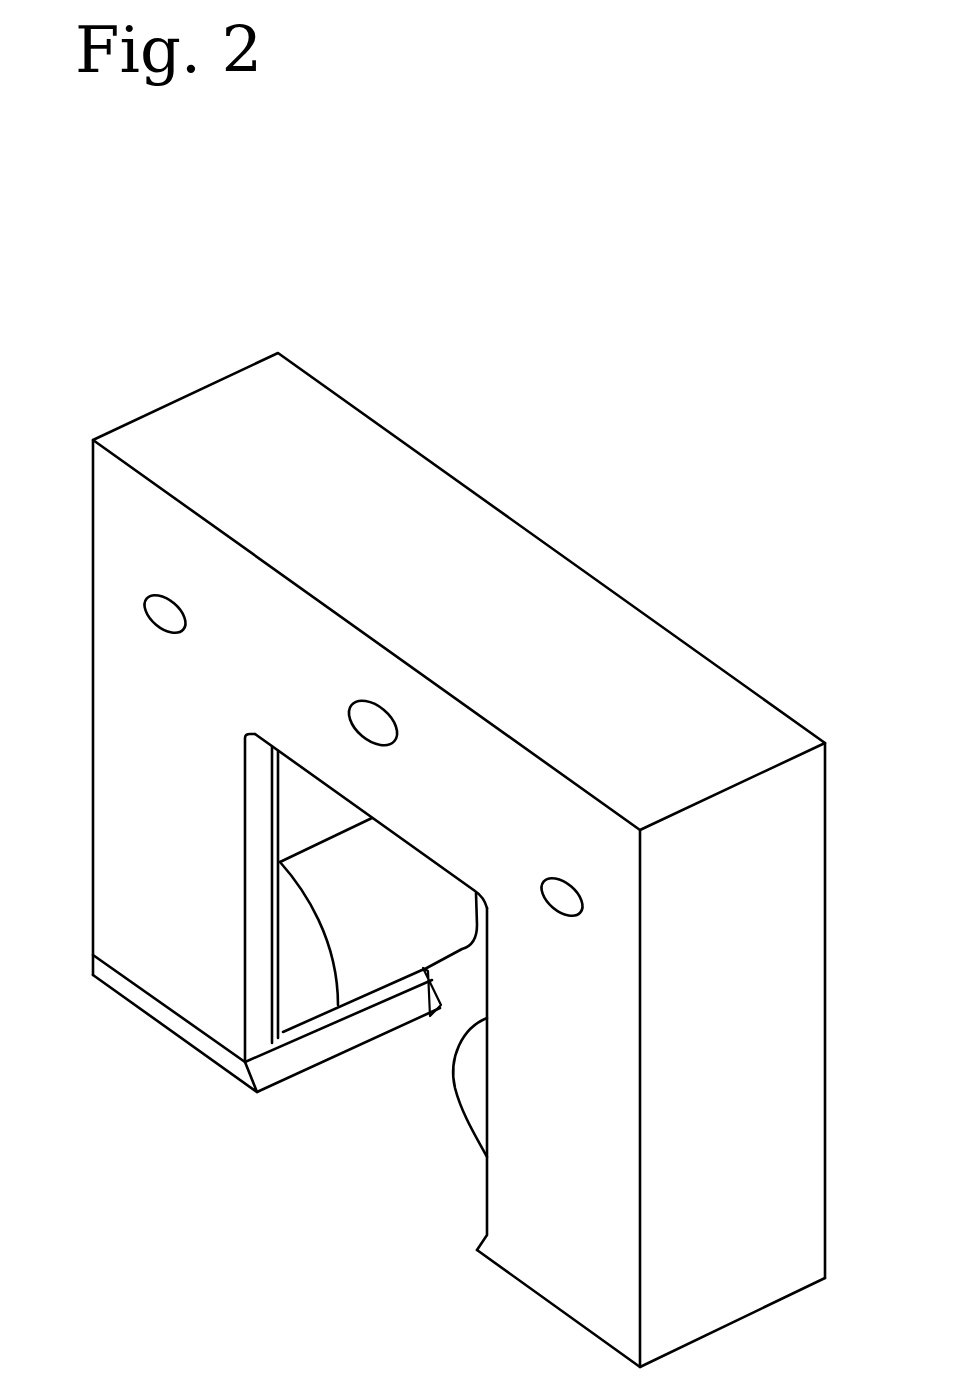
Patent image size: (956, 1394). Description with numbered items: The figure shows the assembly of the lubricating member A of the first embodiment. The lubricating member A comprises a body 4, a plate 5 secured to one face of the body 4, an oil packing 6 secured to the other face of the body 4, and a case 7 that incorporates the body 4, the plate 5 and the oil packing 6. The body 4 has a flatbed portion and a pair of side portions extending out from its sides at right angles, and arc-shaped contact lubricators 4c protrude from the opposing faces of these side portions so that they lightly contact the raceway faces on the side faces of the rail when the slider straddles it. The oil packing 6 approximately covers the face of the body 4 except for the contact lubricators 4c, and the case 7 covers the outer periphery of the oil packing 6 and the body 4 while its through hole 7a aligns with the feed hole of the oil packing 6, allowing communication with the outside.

The lubricating member A is at (603, 531).
The case 7 is at (168, 432).
The through hole 7a is at (390, 716).
The body 4 is at (308, 827).
The contact lubricator 4c is at (362, 972).
The plate 5 is at (423, 972).
The oil packing 6 is at (277, 1047).